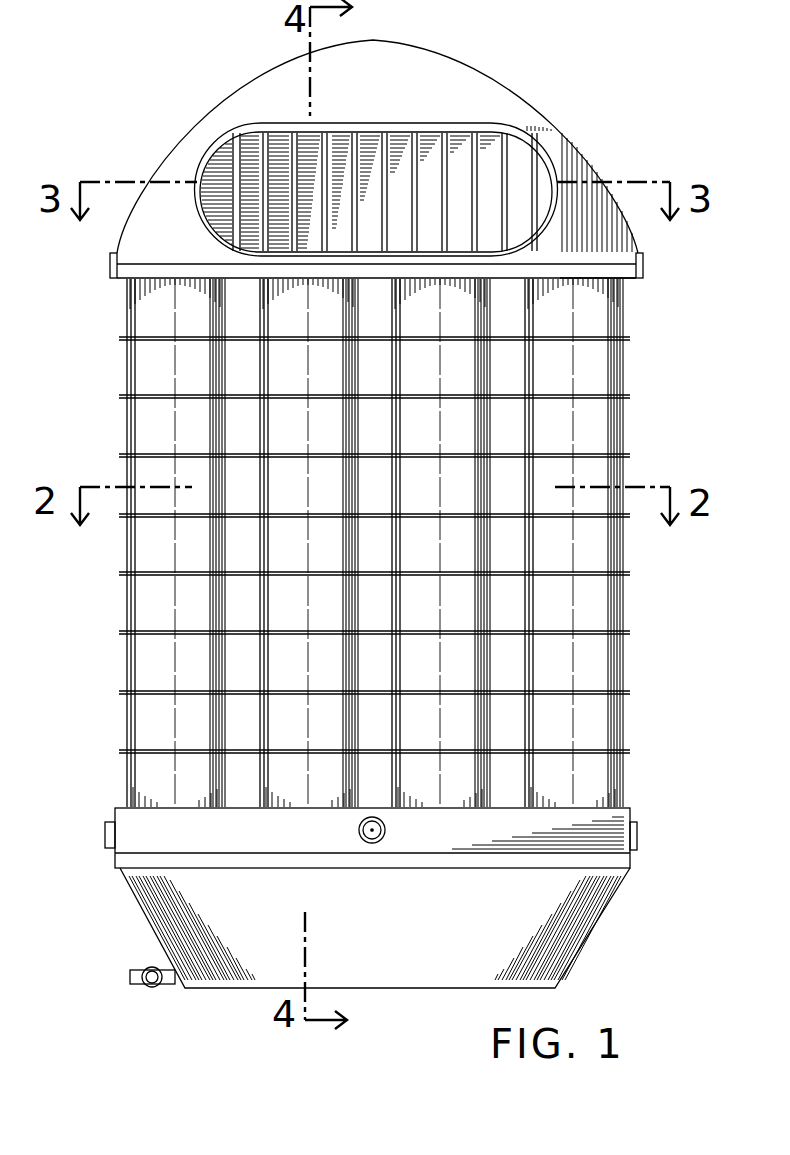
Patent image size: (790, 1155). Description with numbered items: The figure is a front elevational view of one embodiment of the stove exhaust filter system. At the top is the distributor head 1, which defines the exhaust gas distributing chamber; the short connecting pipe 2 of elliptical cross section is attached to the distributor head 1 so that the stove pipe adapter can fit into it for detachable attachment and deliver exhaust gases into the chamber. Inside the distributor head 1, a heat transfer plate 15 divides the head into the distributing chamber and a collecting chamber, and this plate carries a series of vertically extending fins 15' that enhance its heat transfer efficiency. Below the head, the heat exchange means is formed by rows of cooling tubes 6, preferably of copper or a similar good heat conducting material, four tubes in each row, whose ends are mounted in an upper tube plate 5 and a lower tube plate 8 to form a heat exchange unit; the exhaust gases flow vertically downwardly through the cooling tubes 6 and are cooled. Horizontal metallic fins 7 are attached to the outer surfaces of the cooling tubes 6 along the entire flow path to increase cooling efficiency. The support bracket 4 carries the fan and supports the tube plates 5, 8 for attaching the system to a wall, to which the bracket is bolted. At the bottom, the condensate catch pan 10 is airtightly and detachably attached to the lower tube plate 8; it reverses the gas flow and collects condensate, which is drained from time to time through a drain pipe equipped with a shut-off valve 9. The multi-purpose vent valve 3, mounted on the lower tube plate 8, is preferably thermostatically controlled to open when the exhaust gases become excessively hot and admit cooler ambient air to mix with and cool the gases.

The distributor head 1 is at (286, 81).
The connecting pipe 2 is at (360, 174).
The vent valve 3 is at (356, 830).
The support bracket 4 is at (108, 262).
The tube plate 5 is at (617, 273).
The cooling tubes 6 is at (300, 371).
The metallic fins 7 is at (121, 691).
The lower tube plate 8 is at (146, 838).
The shut-off valve 9 is at (144, 968).
The condensate catch pan 10 is at (492, 946).
The heat transfer plate 15 is at (385, 172).
The vertically extending fins 15' is at (350, 170).